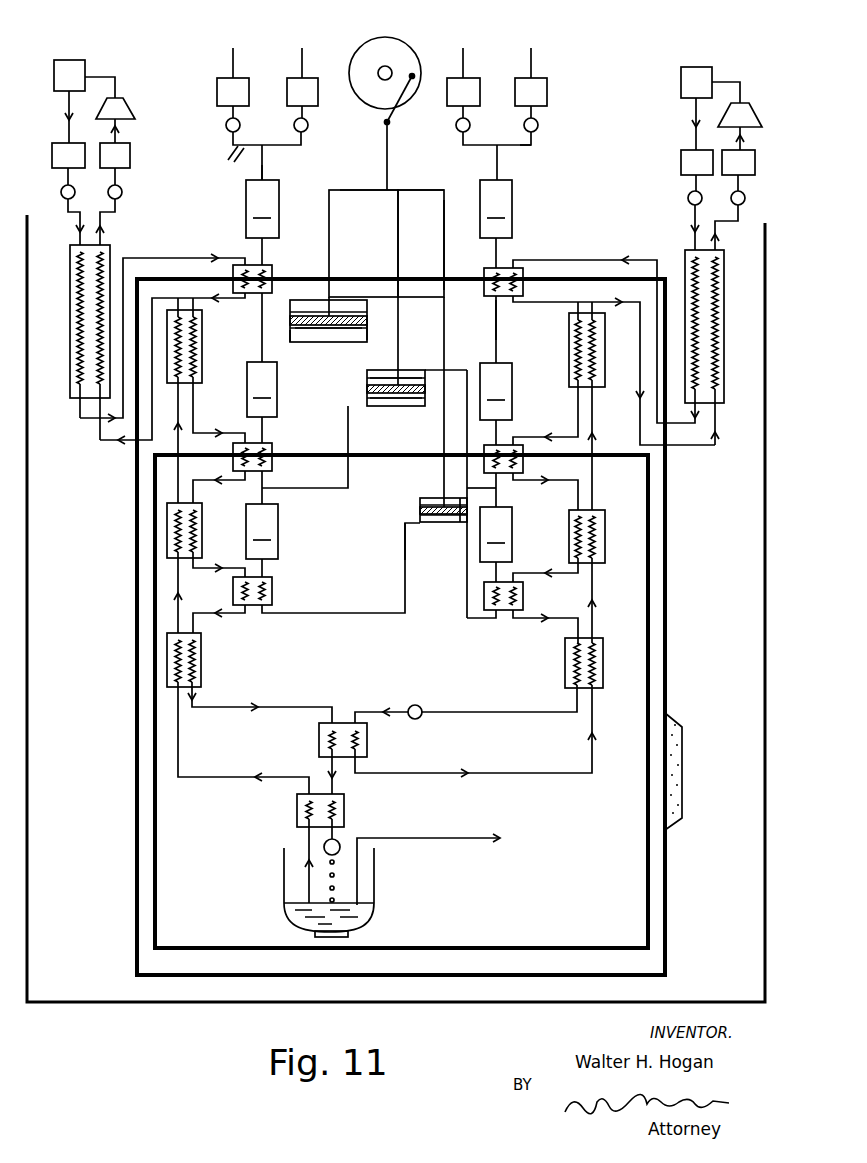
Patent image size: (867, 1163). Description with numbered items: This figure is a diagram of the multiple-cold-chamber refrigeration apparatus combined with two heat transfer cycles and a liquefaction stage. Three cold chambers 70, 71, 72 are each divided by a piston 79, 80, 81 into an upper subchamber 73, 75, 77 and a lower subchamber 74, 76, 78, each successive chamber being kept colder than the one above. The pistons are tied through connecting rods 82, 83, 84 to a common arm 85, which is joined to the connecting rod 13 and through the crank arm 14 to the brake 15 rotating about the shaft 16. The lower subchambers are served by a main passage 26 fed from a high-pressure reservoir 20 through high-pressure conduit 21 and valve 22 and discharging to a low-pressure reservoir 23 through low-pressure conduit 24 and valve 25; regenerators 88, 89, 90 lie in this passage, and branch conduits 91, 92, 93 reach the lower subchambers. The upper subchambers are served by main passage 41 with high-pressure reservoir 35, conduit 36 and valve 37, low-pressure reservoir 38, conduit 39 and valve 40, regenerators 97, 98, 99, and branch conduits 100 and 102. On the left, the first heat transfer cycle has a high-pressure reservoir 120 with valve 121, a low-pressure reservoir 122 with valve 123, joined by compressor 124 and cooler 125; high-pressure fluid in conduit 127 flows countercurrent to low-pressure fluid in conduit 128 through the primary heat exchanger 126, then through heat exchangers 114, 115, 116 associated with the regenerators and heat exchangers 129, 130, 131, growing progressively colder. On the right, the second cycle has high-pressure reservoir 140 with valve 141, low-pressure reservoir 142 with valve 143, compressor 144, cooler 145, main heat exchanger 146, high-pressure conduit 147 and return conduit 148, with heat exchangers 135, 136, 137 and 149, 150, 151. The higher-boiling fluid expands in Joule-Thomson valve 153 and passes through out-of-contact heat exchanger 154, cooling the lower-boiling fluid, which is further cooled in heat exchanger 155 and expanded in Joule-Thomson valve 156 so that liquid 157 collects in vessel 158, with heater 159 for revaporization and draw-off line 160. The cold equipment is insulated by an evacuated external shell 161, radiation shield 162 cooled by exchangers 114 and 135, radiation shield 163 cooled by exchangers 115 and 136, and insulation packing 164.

The connecting rod 13 is at (387, 152).
The crank arm 14 is at (400, 97).
The brake 15 is at (396, 38).
The shaft 16 is at (392, 70).
The high-pressure reservoir 20 is at (223, 78).
The high-pressure conduit 21 is at (224, 156).
The valve 22 is at (226, 125).
The low-pressure reservoir 23 is at (305, 78).
The low-pressure conduit 24 is at (283, 146).
The valve 25 is at (308, 125).
The main passage 26 is at (264, 168).
The high-pressure reservoir 35 is at (477, 78).
The high-pressure conduit 36 is at (470, 146).
The valve 37 is at (457, 125).
The low-pressure reservoir 38 is at (545, 78).
The low-pressure conduit 39 is at (534, 143).
The valve 40 is at (538, 125).
The main passage 41 is at (497, 164).
The cold chamber 70 is at (320, 300).
The cold chamber 71 is at (398, 371).
The cold chamber 72 is at (429, 498).
The upper subchamber 73 is at (358, 313).
The lower subchamber 74 is at (330, 342).
The subchamber 75 is at (367, 377).
The subchamber 76 is at (367, 399).
The subchamber 77 is at (455, 497).
The subchamber 78 is at (433, 522).
The piston 79 is at (352, 322).
The piston 80 is at (408, 394).
The piston 81 is at (420, 510).
The connecting rod 82 is at (330, 218).
The connecting rod 83 is at (399, 218).
The connecting rod 84 is at (444, 240).
The common arm 85 is at (415, 190).
The regenerator 88 is at (262, 222).
The regenerator 89 is at (262, 368).
The regenerator 90 is at (262, 540).
The branch conduit 91 is at (280, 357).
The branch conduit 92 is at (290, 490).
The branch conduit 93 is at (338, 613).
The regenerator 97 is at (496, 224).
The regenerator 98 is at (496, 404).
The regenerator 99 is at (496, 544).
The branch conduit 100 is at (486, 297).
The branch conduit 102 is at (467, 566).
The heat exchanger 114 is at (262, 268).
The heat exchanger 115 is at (262, 447).
The heat exchanger 116 is at (272, 591).
The high-pressure reservoir 120 is at (57, 148).
The valve 121 is at (61, 191).
The low-pressure reservoir 122 is at (120, 152).
The valve 123 is at (122, 191).
The compressor 124 is at (120, 108).
The cooler 125 is at (76, 63).
The primary heat exchanger 126 is at (110, 260).
The high-pressure conduit 127 is at (150, 262).
The low-pressure return conduit 128 is at (110, 456).
The heat exchanger 129 is at (202, 325).
The heat exchanger 130 is at (202, 532).
The heat exchanger 131 is at (201, 661).
The heat exchanger 135 is at (521, 272).
The heat exchanger 136 is at (522, 448).
The heat exchanger 137 is at (522, 597).
The high-pressure reservoir 140 is at (683, 152).
The high-pressure valve 141 is at (688, 198).
The low-pressure reservoir 142 is at (758, 142).
The valve 143 is at (745, 198).
The compressor 144 is at (745, 108).
The cooler 145 is at (702, 70).
The main heat exchanger 146 is at (724, 285).
The high-pressure conduit 147 is at (540, 260).
The low-pressure return conduit 148 is at (640, 380).
The heat exchanger 149 is at (605, 338).
The heat exchanger 150 is at (605, 535).
The heat exchanger 151 is at (603, 663).
The Joule-Thomson valve 153 is at (417, 705).
The out-of-contact heat exchanger 154 is at (367, 746).
The heat exchanger 155 is at (344, 806).
The Joule-Thomson valve 156 is at (340, 843).
The liquid 157 is at (368, 912).
The liquid collection vessel 158 is at (374, 890).
The heater 159 is at (348, 934).
The draw-off line 160 is at (462, 838).
The external shell 161 is at (765, 772).
The radiation shield 162 is at (137, 553).
The radiation shield 163 is at (153, 657).
The insulation packing 164 is at (682, 770).